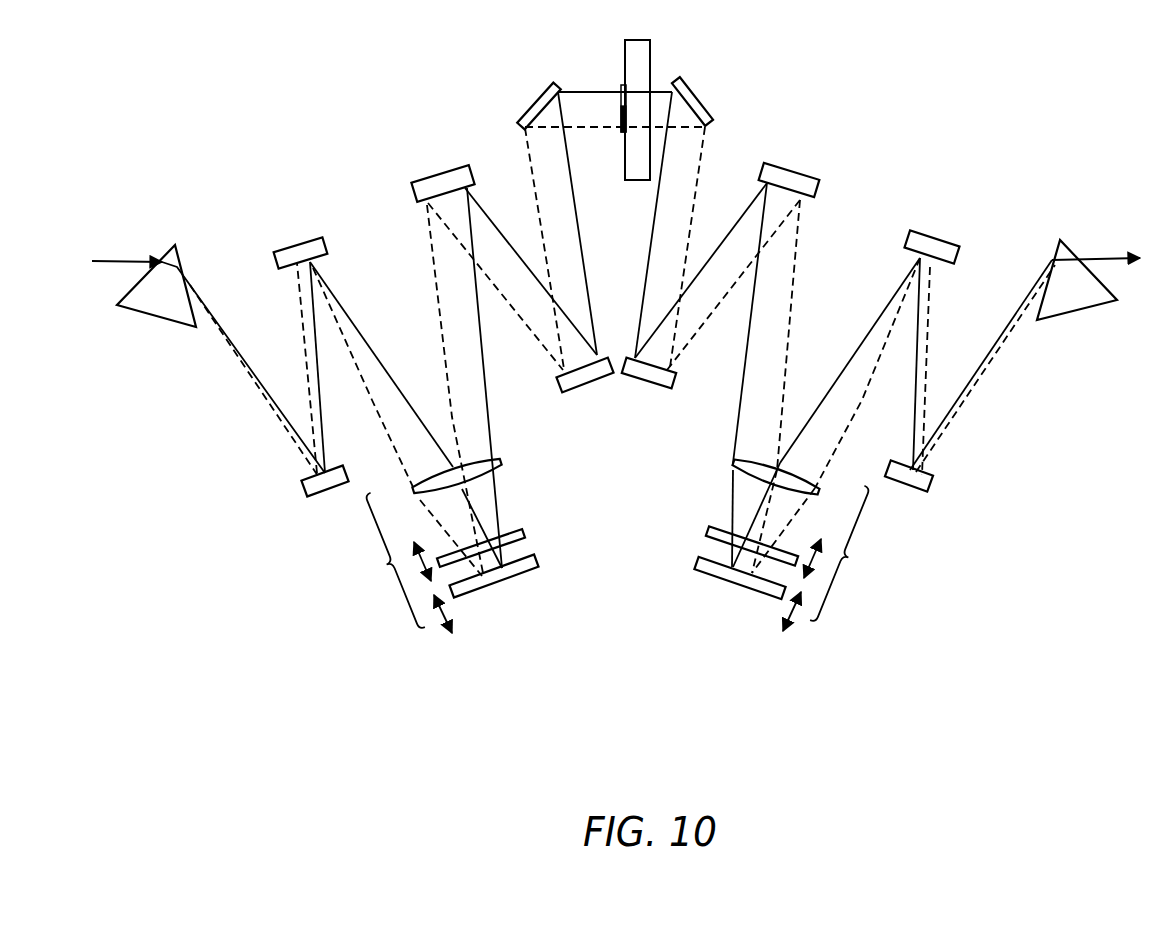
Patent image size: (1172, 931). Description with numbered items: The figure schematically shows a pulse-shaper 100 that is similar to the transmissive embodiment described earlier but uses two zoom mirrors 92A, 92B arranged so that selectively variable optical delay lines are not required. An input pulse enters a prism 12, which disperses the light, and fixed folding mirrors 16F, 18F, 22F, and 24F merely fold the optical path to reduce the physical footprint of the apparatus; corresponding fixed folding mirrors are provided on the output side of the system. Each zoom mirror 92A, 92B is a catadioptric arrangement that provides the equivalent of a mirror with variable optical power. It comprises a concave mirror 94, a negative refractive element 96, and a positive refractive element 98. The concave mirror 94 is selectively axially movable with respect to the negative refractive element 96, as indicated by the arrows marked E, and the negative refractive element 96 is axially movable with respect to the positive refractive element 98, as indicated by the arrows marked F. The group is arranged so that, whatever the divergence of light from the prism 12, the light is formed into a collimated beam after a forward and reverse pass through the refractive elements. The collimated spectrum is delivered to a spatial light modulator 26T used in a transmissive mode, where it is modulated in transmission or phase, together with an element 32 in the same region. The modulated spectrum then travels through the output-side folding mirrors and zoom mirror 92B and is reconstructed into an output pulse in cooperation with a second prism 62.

The prism 12 is at (178, 323).
The fixed folding mirror 16F is at (303, 478).
The fixed folding mirror 18F is at (285, 255).
The fixed folding mirror 22F is at (432, 197).
The fixed folding mirror 24F is at (575, 380).
The transmissive spatial light modulator 26T is at (623, 92).
The mirror 32 is at (553, 88).
The second prism 62 is at (1055, 313).
The zoom mirror 92A is at (406, 566).
The zoom mirror 92B is at (838, 569).
The concave mirror 94 is at (537, 563).
The negative refractive element 96 is at (525, 530).
The positive refractive element 98 is at (498, 462).
The optical system 100 is at (886, 710).